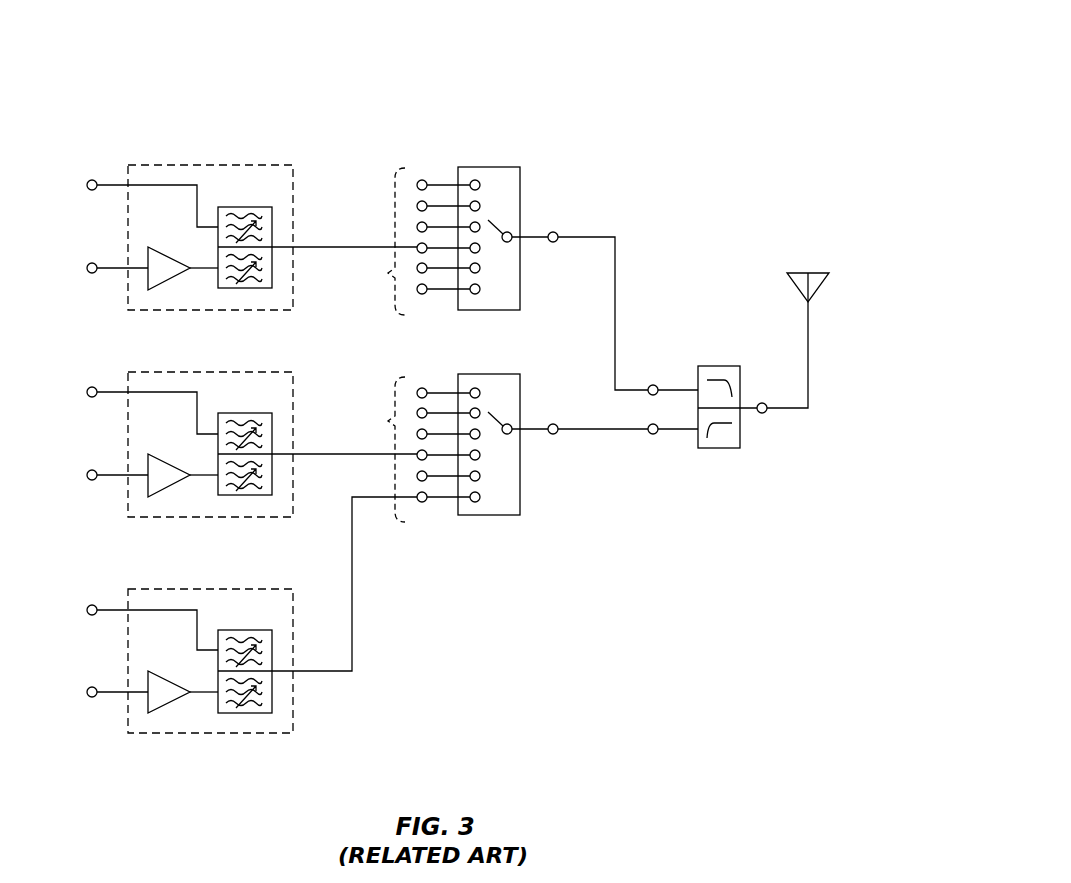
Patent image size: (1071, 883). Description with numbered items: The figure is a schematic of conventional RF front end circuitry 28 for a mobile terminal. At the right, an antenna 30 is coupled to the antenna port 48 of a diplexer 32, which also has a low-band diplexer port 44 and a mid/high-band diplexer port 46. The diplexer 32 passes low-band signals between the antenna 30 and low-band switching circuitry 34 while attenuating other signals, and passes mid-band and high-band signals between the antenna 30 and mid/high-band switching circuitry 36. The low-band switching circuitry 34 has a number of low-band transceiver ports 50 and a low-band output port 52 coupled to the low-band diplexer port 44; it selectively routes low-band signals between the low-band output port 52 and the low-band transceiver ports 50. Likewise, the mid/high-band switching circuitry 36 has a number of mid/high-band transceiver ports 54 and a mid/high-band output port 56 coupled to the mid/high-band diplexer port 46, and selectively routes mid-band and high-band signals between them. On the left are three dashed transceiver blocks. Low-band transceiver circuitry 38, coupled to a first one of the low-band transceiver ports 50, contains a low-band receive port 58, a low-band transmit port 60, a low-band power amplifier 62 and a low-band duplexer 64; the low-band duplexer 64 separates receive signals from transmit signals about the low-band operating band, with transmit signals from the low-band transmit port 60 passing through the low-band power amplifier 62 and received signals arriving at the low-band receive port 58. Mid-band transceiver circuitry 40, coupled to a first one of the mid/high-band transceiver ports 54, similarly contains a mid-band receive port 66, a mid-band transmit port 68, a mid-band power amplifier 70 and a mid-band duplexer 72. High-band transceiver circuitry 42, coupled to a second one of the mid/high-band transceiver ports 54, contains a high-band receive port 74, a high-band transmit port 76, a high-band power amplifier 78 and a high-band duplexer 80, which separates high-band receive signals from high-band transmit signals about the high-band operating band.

The conventional RF front end circuitry 28 is at (652, 70).
The antenna 30 is at (817, 273).
The diplexer 32 is at (727, 448).
The low-band switching circuitry 34 is at (492, 167).
The mid/high-band switching circuitry 36 is at (495, 515).
The low-band transceiver circuitry 38 is at (233, 165).
The mid-band transceiver circuitry 40 is at (233, 372).
The high-band transceiver circuitry 42 is at (233, 589).
The low-band diplexer port 44 is at (653, 385).
The mid/high-band diplexer port 46 is at (653, 434).
The antenna port 48 is at (762, 403).
The low-band transceiver ports 50 is at (379, 241).
The low-band output port 52 is at (553, 232).
The mid/high-band transceiver ports 54 is at (379, 449).
The mid/high-band output port 56 is at (553, 424).
The low-band receive port 58 is at (87, 185).
The low-band transmit port 60 is at (87, 268).
The low-band power amplifier 62 is at (167, 256).
The low-band duplexer 64 is at (232, 207).
The mid-band receive port 66 is at (87, 392).
The mid-band transmit port 68 is at (87, 475).
The mid-band power amplifier 70 is at (167, 463).
The mid-band duplexer 72 is at (232, 413).
The high-band receive port 74 is at (87, 610).
The high-band transmit port 76 is at (87, 692).
The high-band power amplifier 78 is at (167, 680).
The high-band duplexer 80 is at (232, 630).